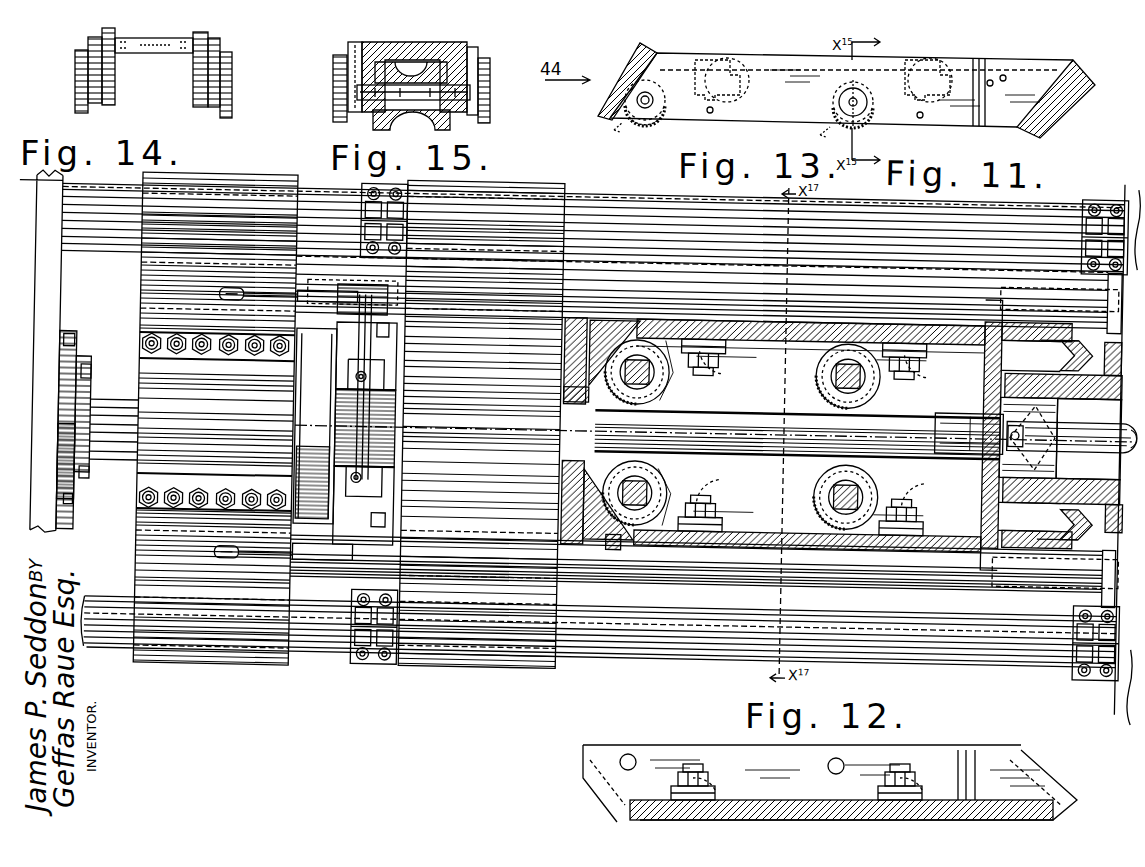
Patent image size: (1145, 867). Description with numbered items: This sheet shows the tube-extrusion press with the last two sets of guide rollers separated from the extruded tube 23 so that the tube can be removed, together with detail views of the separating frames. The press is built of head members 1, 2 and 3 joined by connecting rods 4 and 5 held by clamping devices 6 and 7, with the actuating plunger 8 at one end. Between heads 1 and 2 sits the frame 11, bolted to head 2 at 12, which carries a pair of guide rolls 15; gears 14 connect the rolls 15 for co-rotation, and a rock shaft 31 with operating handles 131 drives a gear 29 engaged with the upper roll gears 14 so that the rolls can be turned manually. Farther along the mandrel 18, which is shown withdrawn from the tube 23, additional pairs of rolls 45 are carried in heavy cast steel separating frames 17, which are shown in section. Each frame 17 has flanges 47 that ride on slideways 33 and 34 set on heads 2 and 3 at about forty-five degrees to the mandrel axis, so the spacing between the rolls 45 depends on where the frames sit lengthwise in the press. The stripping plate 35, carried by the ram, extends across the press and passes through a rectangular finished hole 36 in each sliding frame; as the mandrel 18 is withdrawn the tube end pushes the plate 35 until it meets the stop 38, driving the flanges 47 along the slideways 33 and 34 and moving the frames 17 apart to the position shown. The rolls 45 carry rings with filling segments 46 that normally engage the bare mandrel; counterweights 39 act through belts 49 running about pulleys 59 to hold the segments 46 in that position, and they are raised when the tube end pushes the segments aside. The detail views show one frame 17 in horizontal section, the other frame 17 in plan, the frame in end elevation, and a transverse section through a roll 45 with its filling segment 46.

In FIG. 11, the head member 1 is at (238, 188).
In FIG. 11, the head member 2 is at (500, 198).
In FIG. 11, the head member 3 is at (1122, 445).
In FIG. 11, the connecting rod 4 is at (1034, 211).
In FIG. 11, the connecting rod 5 is at (844, 286).
In FIG. 11, the clamping device 6 is at (368, 201).
In FIG. 11, the clamping device 7 is at (213, 421).
In FIG. 11, the actuating plunger 8 is at (118, 412).
In FIG. 11, the frame 11 is at (315, 426).
In FIG. 11, the bolting 12 is at (392, 322).
In FIG. 11, the gears 14 is at (396, 382).
In FIG. 11, the guide rolls 15 is at (395, 458).
In FIG. 14, the separating frame 17 is at (164, 53).
In FIG. 15, the separating frame 17 is at (421, 45).
In FIG. 13, the separating frame 17 is at (773, 110).
In FIG. 12, the separating frame 17 is at (733, 758).
In FIG. 11, the separating frame 17 is at (797, 435).
In FIG. 11, the mandrel 18 is at (1082, 410).
In FIG. 11, the extruded tube 23 is at (918, 412).
In FIG. 11, the gear 29 is at (368, 433).
In FIG. 11, the rock shaft 31 is at (362, 326).
In FIG. 11, the slideway 33 is at (586, 309).
In FIG. 11, the slideway 34 is at (1074, 468).
In FIG. 11, the stripping plate 35 is at (988, 449).
In FIG. 13, the rectangular finished hole 36 is at (979, 92).
In FIG. 12, the rectangular finished hole 36 is at (988, 812).
In FIG. 11, the rectangular finished hole 36 is at (978, 330).
In FIG. 11, the stop 38 is at (1037, 435).
In FIG. 13, the counterweight 39 is at (759, 104).
In FIG. 11, the counterweight 39 is at (742, 425).
In FIG. 15, the rolls 45 is at (414, 78).
In FIG. 13, the rolls 45 is at (640, 118).
In FIG. 11, the rolls 45 is at (630, 321).
In FIG. 15, the filling segments 46 is at (416, 113).
In FIG. 13, the filling segments 46 is at (655, 120).
In FIG. 11, the filling segments 46 is at (866, 464).
In FIG. 14, the flanges 47 is at (76, 80).
In FIG. 15, the flanges 47 is at (334, 93).
In FIG. 13, the flanges 47 is at (625, 62).
In FIG. 12, the flanges 47 is at (604, 796).
In FIG. 11, the flanges 47 is at (631, 309).
In FIG. 13, the belts 49 is at (690, 62).
In FIG. 11, the belts 49 is at (675, 327).
In FIG. 13, the pulleys 59 is at (708, 62).
In FIG. 12, the pulleys 59 is at (683, 770).
In FIG. 11, the pulleys 59 is at (708, 328).
In FIG. 11, the operating handles 131 is at (222, 292).